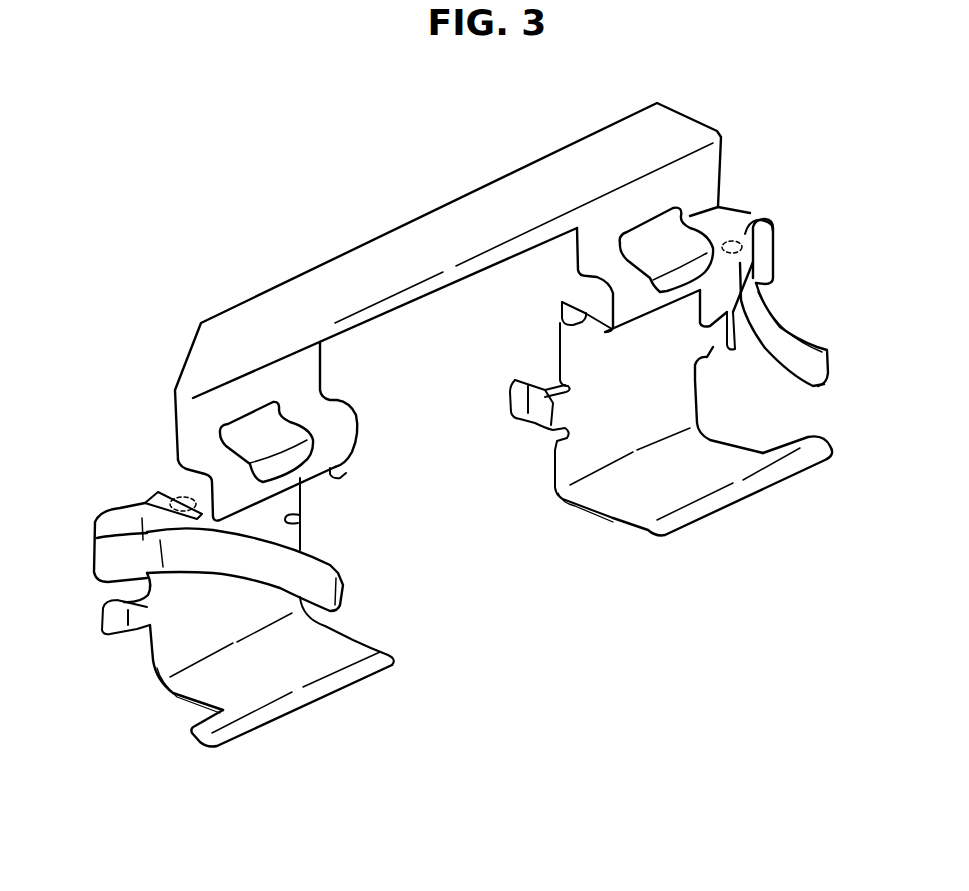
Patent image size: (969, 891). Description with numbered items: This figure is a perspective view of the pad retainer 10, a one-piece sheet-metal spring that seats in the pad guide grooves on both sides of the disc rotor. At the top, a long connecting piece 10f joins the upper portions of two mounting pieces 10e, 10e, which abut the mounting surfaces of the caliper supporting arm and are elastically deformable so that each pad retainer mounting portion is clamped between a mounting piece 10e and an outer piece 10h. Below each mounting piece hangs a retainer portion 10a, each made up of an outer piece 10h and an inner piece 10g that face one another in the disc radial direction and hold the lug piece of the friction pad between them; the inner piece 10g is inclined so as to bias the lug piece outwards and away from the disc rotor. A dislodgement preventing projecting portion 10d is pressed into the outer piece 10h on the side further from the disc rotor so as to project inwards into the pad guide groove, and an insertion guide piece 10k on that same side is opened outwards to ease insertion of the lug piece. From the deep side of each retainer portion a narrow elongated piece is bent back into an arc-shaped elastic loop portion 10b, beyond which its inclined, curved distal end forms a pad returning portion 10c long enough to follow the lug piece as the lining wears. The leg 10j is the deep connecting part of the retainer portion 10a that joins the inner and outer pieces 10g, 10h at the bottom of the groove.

The pad retainer 10 is at (449, 121).
The retainer portion 10a is at (314, 520).
The elastic loop portion 10b is at (776, 258).
The pad returning portion 10c is at (340, 588).
The dislodgement preventing projecting portion 10d is at (180, 500).
The mounting piece 10e is at (337, 404).
The connecting piece 10f is at (420, 235).
The inner piece 10g is at (348, 640).
The outer piece 10h is at (346, 469).
The leg 10j is at (150, 658).
The insertion guide piece 10k is at (147, 503).